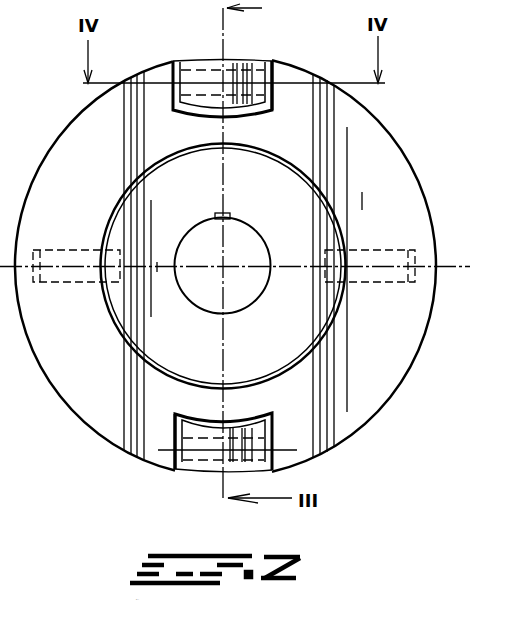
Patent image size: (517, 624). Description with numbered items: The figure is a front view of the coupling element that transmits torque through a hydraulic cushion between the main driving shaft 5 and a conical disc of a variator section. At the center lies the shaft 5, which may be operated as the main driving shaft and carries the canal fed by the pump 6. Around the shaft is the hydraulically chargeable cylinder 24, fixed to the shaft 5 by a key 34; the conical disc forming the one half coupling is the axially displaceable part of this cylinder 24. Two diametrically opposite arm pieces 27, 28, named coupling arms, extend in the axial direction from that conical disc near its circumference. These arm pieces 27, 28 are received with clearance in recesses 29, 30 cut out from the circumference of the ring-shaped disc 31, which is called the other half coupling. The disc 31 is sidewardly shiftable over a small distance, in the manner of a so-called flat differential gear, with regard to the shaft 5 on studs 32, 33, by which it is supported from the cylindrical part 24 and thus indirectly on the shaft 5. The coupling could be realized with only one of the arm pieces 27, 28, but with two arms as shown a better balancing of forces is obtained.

The shaft 5 is at (250, 247).
The hydraulically chargeable cylinder 24 is at (307, 330).
The arm piece 27 is at (198, 73).
The arm piece 28 is at (207, 471).
The recess 29 is at (266, 62).
The recess 30 is at (177, 469).
The disc 31 is at (413, 213).
The stud 32 is at (42, 280).
The stud 33 is at (367, 282).
The key 34 is at (236, 214).
The pump 6 is at (3, 445).